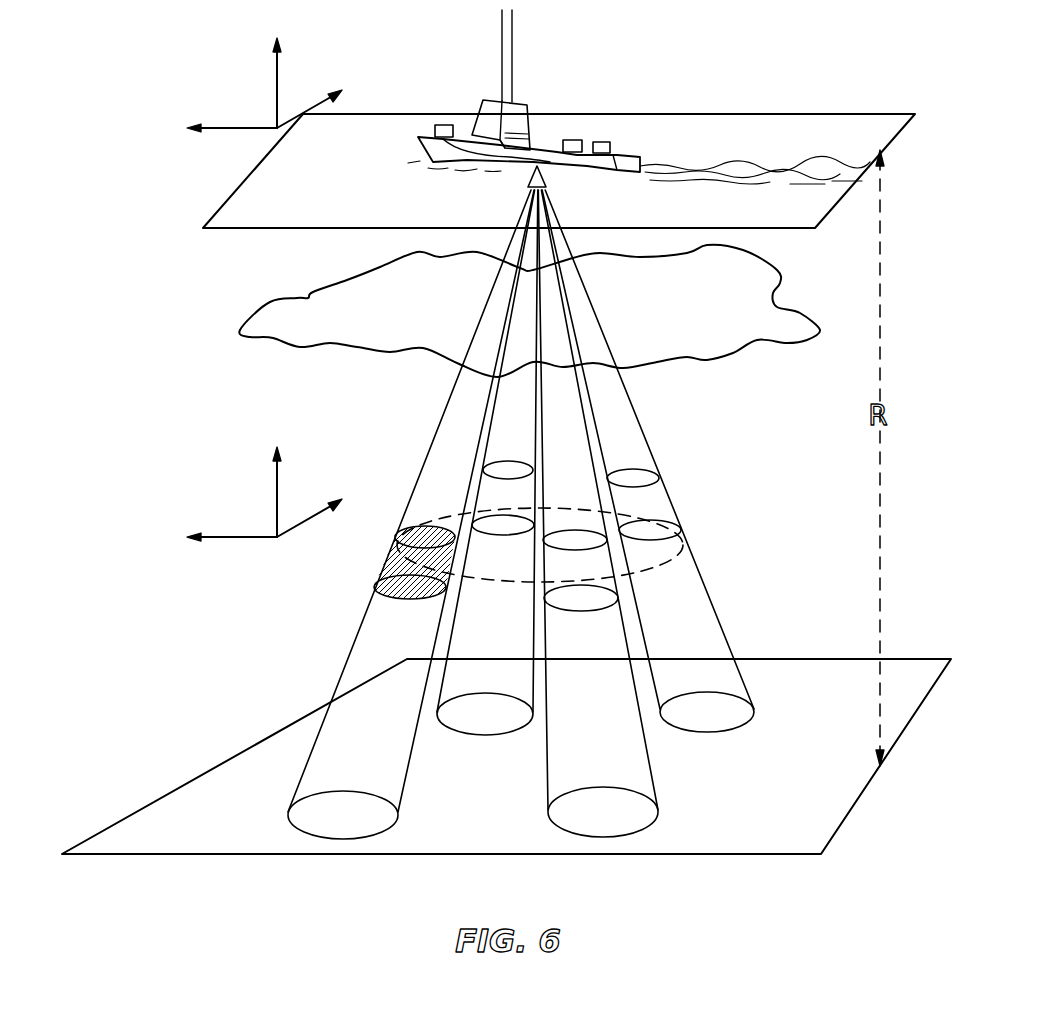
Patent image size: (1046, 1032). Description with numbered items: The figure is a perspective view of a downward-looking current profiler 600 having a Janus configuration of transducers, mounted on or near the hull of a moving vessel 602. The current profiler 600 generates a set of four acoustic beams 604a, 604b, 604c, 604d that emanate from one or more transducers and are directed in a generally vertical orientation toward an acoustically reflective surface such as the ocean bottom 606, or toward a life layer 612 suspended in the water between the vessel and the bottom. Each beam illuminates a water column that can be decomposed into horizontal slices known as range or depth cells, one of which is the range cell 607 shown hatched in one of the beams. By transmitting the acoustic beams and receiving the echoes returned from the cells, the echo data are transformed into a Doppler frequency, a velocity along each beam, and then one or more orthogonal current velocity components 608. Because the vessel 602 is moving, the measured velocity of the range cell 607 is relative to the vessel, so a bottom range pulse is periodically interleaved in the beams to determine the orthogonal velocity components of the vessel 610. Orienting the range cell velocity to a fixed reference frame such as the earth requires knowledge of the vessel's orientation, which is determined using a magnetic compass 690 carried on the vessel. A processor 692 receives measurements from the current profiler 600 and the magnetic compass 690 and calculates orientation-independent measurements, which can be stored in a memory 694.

The orthogonal velocity components of the vessel 610 is at (235, 70).
The vessel 602 is at (522, 102).
The magnetic compass 690 is at (445, 125).
The processor 692 is at (572, 140).
The memory 694 is at (600, 142).
The current profiler 600 is at (545, 182).
The life layer 612 is at (300, 298).
The orthogonal current velocity components 608 is at (235, 479).
The range cell 607 is at (383, 555).
The acoustic beam 604a is at (338, 683).
The acoustic beam 604b is at (625, 635).
The acoustic beam 604c is at (727, 643).
The acoustic beam 604d is at (450, 634).
The ocean bottom 606 is at (905, 659).